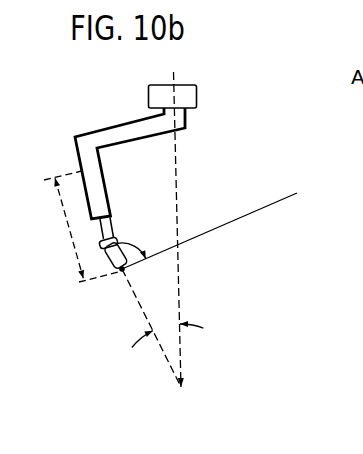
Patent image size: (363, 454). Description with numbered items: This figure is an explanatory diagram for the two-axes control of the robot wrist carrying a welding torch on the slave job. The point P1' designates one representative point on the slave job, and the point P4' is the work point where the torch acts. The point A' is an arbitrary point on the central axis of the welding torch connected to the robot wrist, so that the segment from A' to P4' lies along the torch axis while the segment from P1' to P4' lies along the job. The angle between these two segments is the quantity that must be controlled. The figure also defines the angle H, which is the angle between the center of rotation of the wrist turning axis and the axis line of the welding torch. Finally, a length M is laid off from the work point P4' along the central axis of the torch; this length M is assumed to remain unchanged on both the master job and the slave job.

The arbitrary point on the central axis of the welding torch A' is at (112, 189).
The representative point on the slave job P1' is at (216, 214).
The work point P4' is at (109, 294).
The length from the work point M is at (81, 226).
The angle H is at (168, 330).